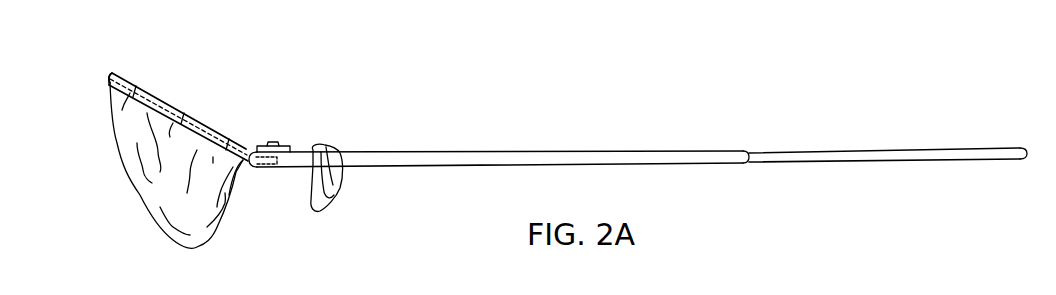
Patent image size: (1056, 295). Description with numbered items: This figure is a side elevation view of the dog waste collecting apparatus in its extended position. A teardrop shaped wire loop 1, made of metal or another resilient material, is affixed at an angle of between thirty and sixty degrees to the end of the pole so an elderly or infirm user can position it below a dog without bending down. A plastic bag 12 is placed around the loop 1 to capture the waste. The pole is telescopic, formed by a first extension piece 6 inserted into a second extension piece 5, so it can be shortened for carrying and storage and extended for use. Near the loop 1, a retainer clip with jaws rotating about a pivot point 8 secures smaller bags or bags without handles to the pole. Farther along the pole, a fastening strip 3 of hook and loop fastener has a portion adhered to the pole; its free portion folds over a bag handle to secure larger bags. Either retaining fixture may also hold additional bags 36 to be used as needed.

The teardrop shaped wire loop 1 is at (171, 107).
The plastic bag 12 is at (136, 190).
The second extension piece 5 is at (510, 160).
The first extension piece 6 is at (920, 151).
The pivot point 8 is at (276, 141).
The fastening strip 3 is at (336, 150).
The additional bags 36 is at (320, 197).